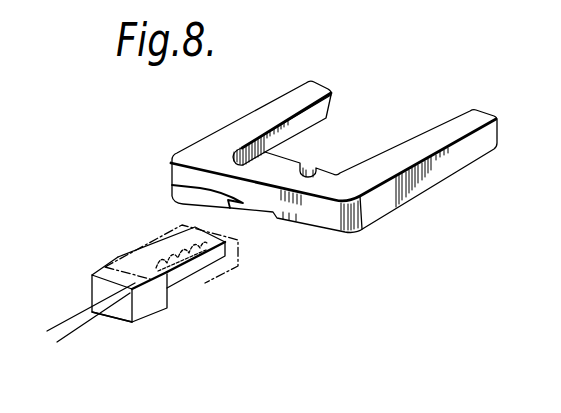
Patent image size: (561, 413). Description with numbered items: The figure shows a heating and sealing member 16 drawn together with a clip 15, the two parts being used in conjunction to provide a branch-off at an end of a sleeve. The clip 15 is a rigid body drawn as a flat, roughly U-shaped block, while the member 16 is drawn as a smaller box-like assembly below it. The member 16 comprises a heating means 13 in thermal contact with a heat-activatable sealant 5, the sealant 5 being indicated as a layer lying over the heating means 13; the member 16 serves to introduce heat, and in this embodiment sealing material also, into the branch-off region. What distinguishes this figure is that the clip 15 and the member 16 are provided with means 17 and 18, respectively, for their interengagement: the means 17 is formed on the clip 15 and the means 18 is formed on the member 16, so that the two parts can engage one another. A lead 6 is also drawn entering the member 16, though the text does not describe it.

The clip 15 is at (240, 119).
The interengagement means 17 is at (172, 185).
The interengagement means 18 is at (92, 276).
The heating means 13 is at (168, 290).
The heat-activatable sealant 5 is at (238, 266).
The cable 6 is at (62, 321).
The heating and sealing member 16 is at (137, 324).